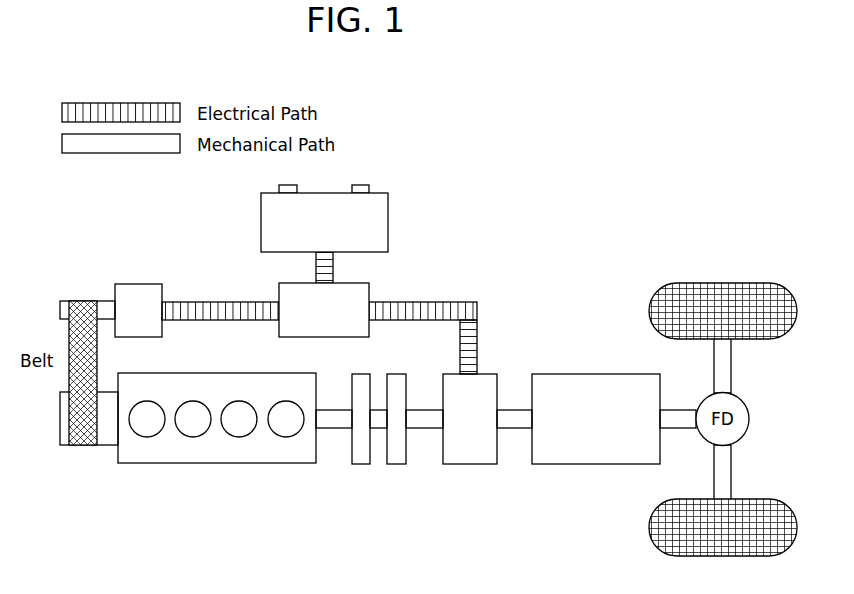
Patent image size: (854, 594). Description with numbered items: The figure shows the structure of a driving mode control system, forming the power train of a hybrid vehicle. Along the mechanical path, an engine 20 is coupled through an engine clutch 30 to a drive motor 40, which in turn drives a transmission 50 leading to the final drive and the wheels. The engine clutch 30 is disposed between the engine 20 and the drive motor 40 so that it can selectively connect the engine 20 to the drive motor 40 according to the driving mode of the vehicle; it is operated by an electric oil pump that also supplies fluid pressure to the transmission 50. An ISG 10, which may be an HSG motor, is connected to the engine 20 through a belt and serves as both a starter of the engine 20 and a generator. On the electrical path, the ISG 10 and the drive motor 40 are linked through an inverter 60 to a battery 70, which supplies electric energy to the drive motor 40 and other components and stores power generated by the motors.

The ISG 10 is at (162, 290).
The engine 20 is at (177, 464).
The engine clutch 30 is at (360, 464).
The drive motor 40 is at (476, 464).
The transmission 50 is at (582, 464).
The inverter 60 is at (369, 290).
The battery 70 is at (388, 199).